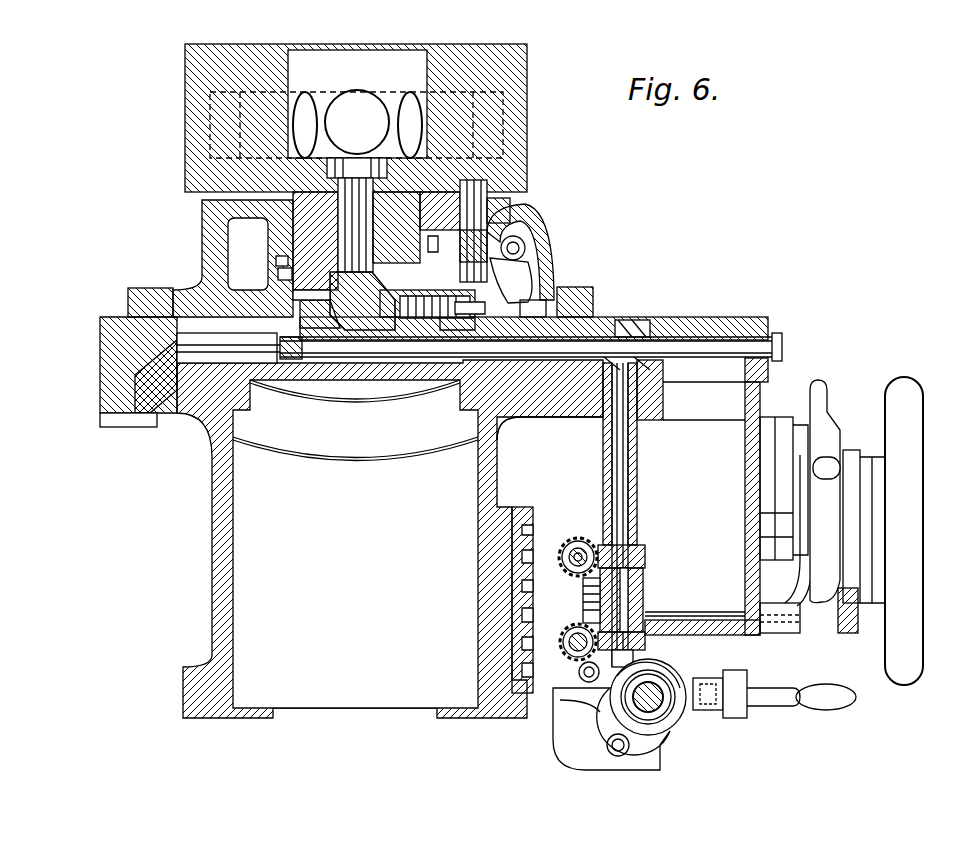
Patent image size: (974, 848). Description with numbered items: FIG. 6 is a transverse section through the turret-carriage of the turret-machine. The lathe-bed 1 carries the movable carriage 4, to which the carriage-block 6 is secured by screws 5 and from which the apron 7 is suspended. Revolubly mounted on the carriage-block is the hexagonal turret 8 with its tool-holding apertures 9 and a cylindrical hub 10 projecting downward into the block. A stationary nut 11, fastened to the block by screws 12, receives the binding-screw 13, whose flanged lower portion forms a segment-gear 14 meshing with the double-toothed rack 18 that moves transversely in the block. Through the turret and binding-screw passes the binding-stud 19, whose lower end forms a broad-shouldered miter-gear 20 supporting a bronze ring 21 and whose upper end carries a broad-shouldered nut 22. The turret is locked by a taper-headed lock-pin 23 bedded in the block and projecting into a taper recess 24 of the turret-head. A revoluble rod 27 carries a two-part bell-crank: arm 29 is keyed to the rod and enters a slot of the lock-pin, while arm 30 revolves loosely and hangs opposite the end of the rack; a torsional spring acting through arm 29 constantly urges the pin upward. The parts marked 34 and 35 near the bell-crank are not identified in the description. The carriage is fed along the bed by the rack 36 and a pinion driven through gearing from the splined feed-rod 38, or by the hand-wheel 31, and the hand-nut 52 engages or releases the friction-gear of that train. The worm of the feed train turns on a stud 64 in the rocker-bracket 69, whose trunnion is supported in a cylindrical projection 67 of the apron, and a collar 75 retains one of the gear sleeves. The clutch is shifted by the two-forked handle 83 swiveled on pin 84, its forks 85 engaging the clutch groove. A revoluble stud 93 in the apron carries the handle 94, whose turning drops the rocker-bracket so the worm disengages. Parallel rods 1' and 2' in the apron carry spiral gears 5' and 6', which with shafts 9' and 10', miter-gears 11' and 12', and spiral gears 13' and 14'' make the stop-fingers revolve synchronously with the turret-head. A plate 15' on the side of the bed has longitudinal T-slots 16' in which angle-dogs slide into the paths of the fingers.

The lathe-bed 1 is at (390, 539).
The parallel rod 1' is at (583, 533).
The parallel rod 2' is at (574, 629).
The movable carriage 4 is at (100, 338).
The screws 5 is at (361, 288).
The spiral gear 5' is at (574, 543).
The carriage-block 6 is at (232, 258).
The spiral gear 6' is at (570, 635).
The apron 7 is at (761, 393).
The hexagonal turret 8 is at (527, 92).
The tool-holding apertures 9 is at (357, 107).
The shaft 9' is at (635, 515).
The cylindrical hub 10 is at (250, 254).
The shaft 10' is at (531, 360).
The stationary nut 11 is at (263, 266).
The miter-gear 11' is at (624, 342).
The screws 12 is at (339, 264).
The miter-gear 12' is at (327, 359).
The binding-screw 13 is at (315, 241).
The spiral gear 13' is at (641, 549).
The segment-gear 14 is at (400, 302).
The spiral gear 14'' is at (637, 628).
The plate 15' is at (536, 585).
The T-slots 16' is at (541, 601).
The double-toothed rack 18 is at (453, 329).
The binding-stud 19 is at (355, 225).
The miter-gear 20 is at (372, 325).
The bronze ring 21 is at (311, 308).
The nut 22 is at (345, 158).
The lock-pin 23 is at (512, 208).
The taper recess 24 is at (490, 186).
The revoluble rod 27 is at (526, 246).
The bell-crank arm 29 is at (510, 280).
The bell-crank arm 30 is at (538, 263).
The hand-wheel 31 is at (923, 452).
The stop 34 is at (533, 307).
The washer 35 is at (470, 314).
The rack 36 is at (560, 424).
The splined feed-rod 38 is at (664, 714).
The hand-nut 52 is at (828, 397).
The stud 64 is at (586, 706).
The cylindrical projection 67 is at (678, 672).
The rocker-bracket 69 is at (580, 752).
The collar 75 is at (656, 708).
The two-forked handle 83 is at (832, 710).
The pin 84 is at (728, 672).
The forks 85 is at (680, 722).
The revoluble stud 93 is at (672, 615).
The handle 94 is at (803, 578).